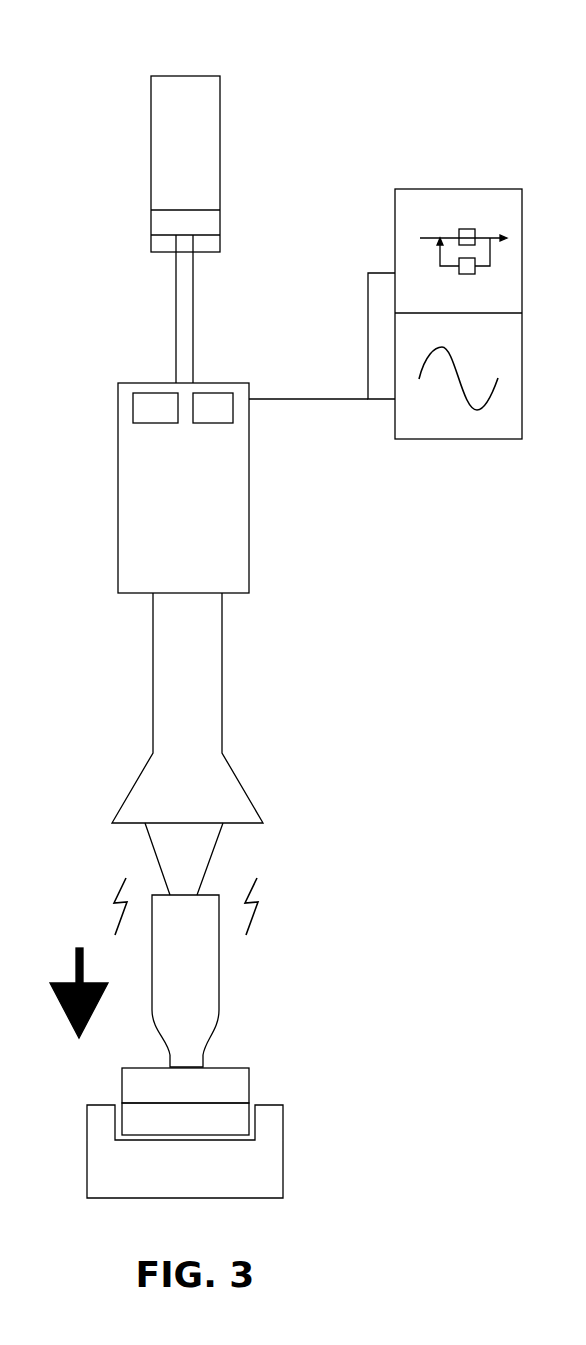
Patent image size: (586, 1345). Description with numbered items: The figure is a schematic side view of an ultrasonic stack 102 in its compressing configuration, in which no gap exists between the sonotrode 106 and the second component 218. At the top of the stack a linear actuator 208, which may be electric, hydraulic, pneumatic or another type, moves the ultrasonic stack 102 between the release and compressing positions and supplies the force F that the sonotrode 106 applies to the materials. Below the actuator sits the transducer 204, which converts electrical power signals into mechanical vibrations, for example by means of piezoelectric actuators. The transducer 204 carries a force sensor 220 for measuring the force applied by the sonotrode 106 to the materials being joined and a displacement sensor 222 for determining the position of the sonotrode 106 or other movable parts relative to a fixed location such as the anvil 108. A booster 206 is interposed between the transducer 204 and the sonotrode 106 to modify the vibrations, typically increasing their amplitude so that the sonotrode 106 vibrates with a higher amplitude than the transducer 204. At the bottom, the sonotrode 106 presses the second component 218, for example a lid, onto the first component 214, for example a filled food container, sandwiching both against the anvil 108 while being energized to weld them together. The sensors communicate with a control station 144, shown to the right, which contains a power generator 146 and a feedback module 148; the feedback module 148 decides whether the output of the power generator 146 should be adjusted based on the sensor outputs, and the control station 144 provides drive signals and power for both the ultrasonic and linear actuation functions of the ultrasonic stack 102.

The ultrasonic stack 102 is at (95, 63).
The linear actuator 208 is at (205, 76).
The feedback module 148 is at (407, 216).
The control station 144 is at (340, 272).
The power generator 146 is at (490, 432).
The transducer 204 is at (203, 542).
The force sensor 220 is at (152, 410).
The displacement sensor 222 is at (210, 417).
The booster 206 is at (225, 778).
The sonotrode 106 is at (222, 967).
The second component 218 is at (229, 1080).
The first component 214 is at (242, 1118).
The anvil 108 is at (272, 1163).